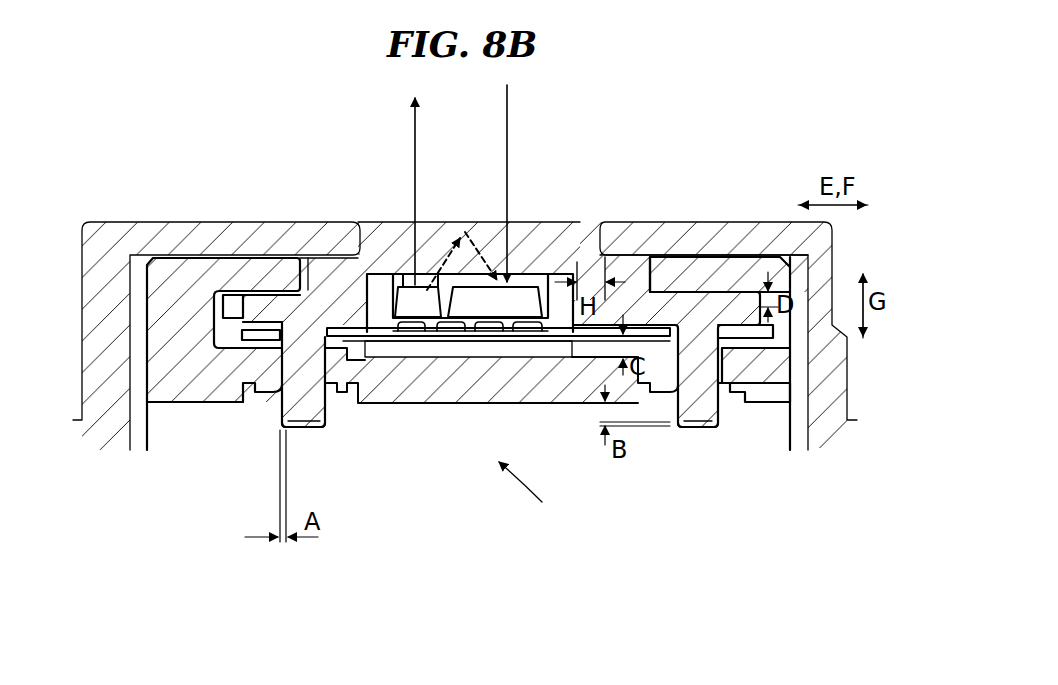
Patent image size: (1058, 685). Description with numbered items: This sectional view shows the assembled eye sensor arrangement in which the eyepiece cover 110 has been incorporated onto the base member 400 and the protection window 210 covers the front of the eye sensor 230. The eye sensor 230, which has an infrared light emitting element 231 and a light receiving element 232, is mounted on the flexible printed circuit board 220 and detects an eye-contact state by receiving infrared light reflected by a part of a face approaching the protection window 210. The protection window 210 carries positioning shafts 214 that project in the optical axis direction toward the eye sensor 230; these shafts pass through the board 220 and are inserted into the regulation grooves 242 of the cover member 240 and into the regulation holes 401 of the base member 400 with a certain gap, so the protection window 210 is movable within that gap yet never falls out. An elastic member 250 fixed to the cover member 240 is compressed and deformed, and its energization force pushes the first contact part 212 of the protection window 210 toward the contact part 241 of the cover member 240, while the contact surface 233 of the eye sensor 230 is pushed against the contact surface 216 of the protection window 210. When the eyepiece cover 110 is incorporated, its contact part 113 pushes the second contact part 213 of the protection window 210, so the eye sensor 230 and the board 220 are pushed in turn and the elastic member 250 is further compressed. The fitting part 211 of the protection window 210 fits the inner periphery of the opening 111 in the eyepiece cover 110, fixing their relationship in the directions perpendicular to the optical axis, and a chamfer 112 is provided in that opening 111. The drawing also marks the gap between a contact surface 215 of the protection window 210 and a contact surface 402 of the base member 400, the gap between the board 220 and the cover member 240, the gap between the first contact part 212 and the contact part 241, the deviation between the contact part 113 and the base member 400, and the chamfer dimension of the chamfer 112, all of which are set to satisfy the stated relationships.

The eyepiece cover 110 is at (103, 224).
The opening 111 is at (572, 245).
The chamfer 112 is at (630, 245).
The contact part 113 is at (667, 240).
The protection window 210 is at (262, 285).
The fitting part 211 is at (340, 243).
The first contact part 212 is at (707, 240).
The second contact part 213 is at (322, 258).
The positioning shaft 214 is at (285, 410).
The contact surface 215 is at (305, 428).
The contact surface 216 is at (557, 280).
The flexible printed circuit board 220 is at (455, 338).
The eye sensor 230 is at (365, 270).
The infrared light emitting element 231 is at (420, 300).
The light receiving element 232 is at (500, 300).
The contact surface 233 is at (415, 278).
The cover member 240 is at (190, 268).
The contact part 241 is at (237, 275).
The regulation groove 242 is at (276, 394).
The elastic member 250 is at (545, 352).
The base member 400 is at (533, 496).
The regulation hole 401 is at (327, 396).
The contact surface 402 is at (320, 430).